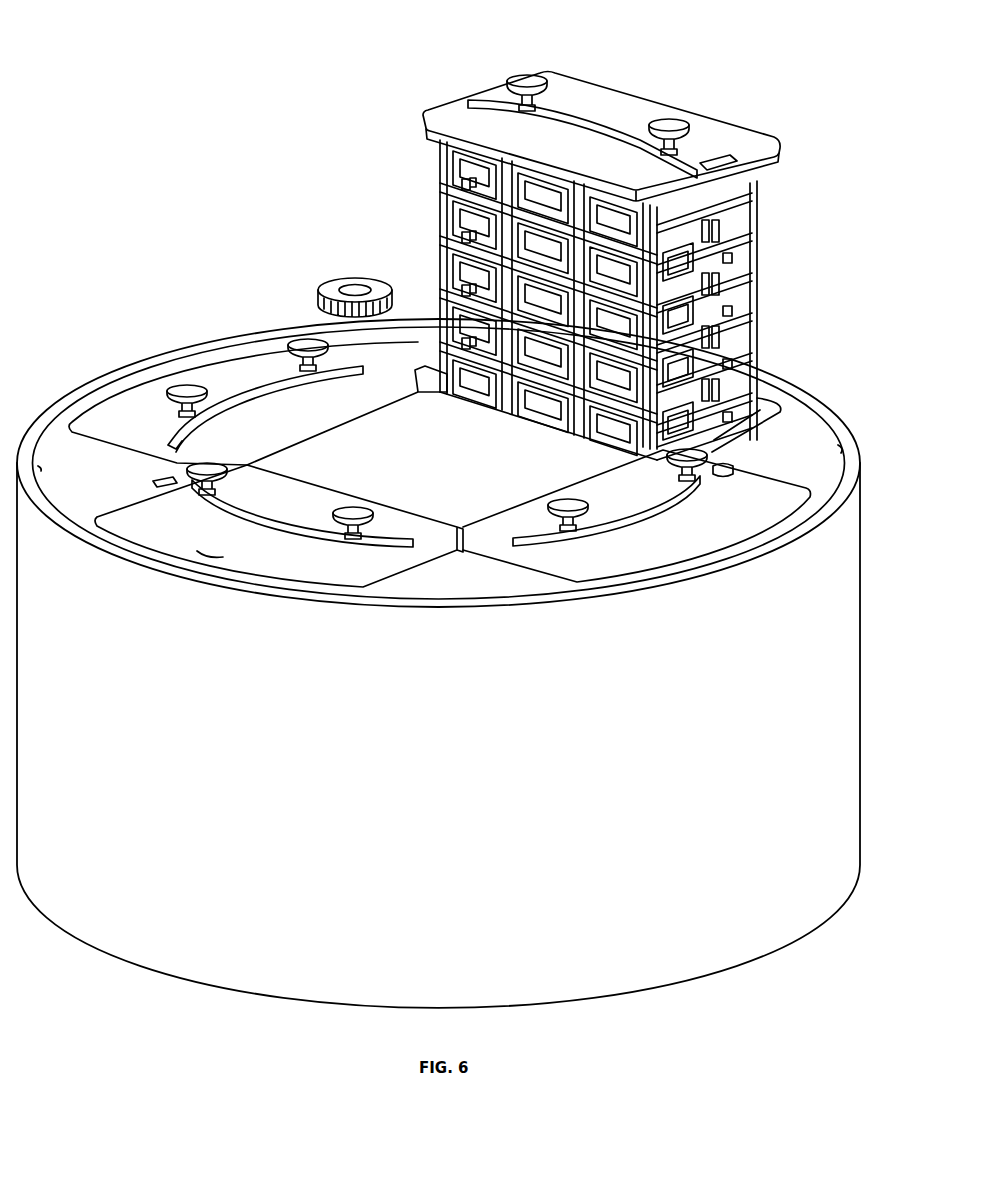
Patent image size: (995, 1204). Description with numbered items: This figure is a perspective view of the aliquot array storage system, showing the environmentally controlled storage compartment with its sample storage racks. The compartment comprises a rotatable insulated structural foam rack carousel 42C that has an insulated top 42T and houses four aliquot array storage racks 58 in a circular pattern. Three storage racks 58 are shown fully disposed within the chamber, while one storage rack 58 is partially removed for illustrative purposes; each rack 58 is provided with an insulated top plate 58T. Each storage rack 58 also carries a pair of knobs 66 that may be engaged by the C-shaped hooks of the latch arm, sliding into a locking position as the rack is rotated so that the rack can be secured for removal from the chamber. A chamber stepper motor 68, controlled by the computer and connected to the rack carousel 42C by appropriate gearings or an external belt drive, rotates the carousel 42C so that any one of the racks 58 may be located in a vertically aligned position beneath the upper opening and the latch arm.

The rack carousel 42C is at (438, 663).
The insulated top 42T is at (767, 443).
The aliquot array storage rack 58 is at (445, 118).
The insulated top plate 58T is at (727, 145).
The knobs 66 is at (669, 119).
The chamber stepper motor 68 is at (353, 277).